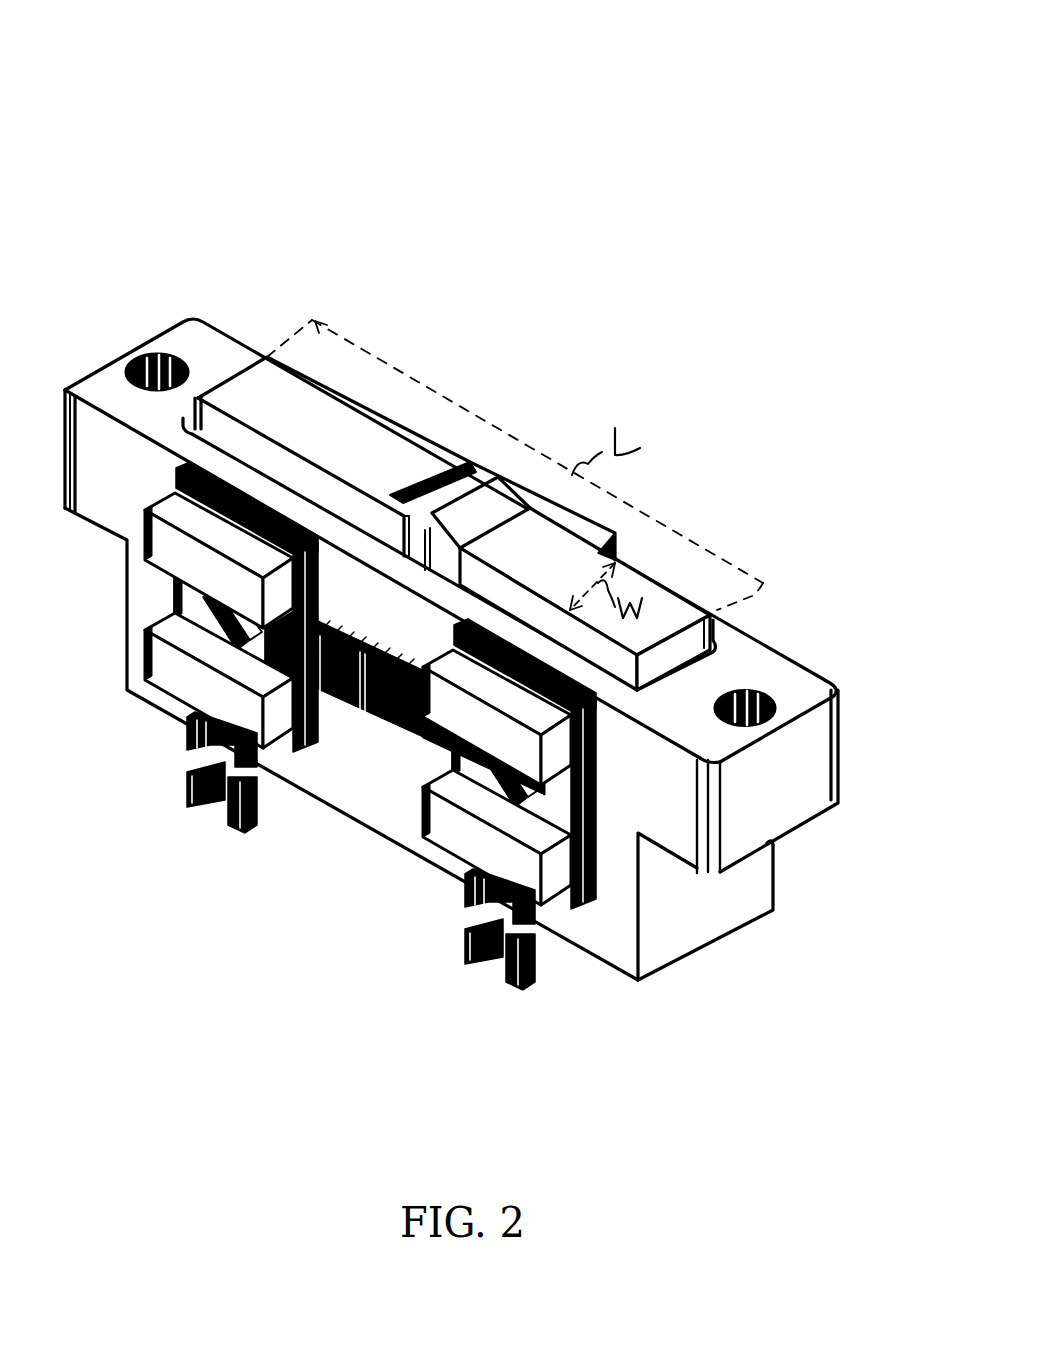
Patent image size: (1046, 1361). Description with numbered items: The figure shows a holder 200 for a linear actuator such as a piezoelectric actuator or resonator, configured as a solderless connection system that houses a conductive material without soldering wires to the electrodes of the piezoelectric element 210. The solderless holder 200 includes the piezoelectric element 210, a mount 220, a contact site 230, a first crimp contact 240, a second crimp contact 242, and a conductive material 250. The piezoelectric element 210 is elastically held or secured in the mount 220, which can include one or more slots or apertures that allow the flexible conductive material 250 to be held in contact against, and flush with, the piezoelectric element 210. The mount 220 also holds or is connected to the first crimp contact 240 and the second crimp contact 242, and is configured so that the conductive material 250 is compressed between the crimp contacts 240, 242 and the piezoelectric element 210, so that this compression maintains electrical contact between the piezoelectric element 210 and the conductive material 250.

The holder 200 is at (512, 62).
The piezoelectric element 210 is at (330, 425).
The mount 220 is at (792, 692).
The contact site 230 is at (470, 470).
The first crimp contact 240 is at (503, 982).
The second crimp contact 242 is at (185, 808).
The conductive material 250 is at (367, 720).